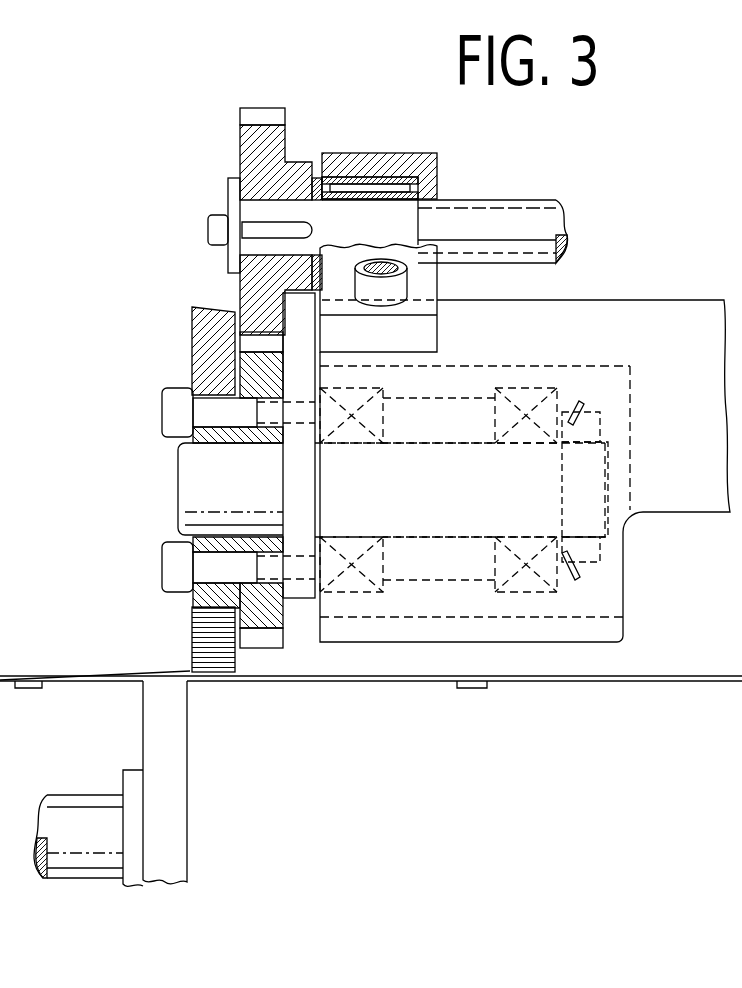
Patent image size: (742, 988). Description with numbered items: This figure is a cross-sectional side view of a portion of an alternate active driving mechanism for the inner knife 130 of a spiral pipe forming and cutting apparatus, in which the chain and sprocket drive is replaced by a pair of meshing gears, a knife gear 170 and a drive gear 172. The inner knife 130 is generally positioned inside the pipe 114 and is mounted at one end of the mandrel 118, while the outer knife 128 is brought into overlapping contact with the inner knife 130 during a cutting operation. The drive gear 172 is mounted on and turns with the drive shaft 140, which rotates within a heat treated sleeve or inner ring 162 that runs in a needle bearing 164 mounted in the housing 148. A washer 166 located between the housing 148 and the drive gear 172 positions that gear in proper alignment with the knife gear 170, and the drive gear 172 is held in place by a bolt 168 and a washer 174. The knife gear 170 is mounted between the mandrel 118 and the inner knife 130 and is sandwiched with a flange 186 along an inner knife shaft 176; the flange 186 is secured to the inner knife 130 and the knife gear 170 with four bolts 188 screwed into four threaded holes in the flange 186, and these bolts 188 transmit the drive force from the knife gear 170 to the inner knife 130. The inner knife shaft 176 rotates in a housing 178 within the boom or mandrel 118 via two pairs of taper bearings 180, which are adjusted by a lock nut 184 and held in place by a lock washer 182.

The pipe 114 is at (347, 682).
The mandrel 118 is at (697, 318).
The outer knife 128 is at (170, 750).
The inner knife 130 is at (198, 634).
The drive shaft 140 is at (510, 222).
The housing 148 is at (418, 160).
The inner ring 162 is at (352, 196).
The needle bearing 164 is at (385, 188).
The washer 166 is at (315, 178).
The bolt 168 is at (213, 217).
The knife gear 170 is at (264, 634).
The drive gear 172 is at (250, 152).
The washer 174 is at (232, 263).
The inner knife shaft 176 is at (200, 471).
The housing 178 is at (478, 388).
The taper bearings 180 is at (385, 395).
The lock washer 182 is at (590, 583).
The lock nut 184 is at (590, 548).
The flange 186 is at (293, 492).
The bolts 188 is at (176, 400).